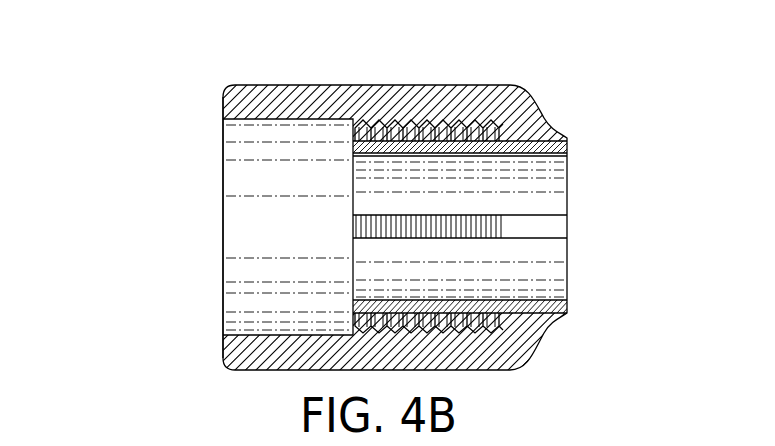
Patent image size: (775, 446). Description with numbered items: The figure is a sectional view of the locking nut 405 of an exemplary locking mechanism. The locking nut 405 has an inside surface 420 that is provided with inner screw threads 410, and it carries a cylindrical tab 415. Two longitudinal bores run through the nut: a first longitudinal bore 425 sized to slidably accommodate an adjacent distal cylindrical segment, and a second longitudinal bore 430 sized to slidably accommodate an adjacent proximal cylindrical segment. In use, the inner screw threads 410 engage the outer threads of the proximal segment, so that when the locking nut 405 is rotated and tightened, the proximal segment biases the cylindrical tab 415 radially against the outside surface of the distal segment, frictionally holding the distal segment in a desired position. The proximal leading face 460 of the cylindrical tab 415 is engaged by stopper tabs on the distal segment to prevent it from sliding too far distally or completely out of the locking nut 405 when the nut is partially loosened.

The locking nut 405 is at (578, 107).
The inner screw threads 410 is at (436, 136).
The cylindrical tab 415 is at (545, 198).
The inside surface 420 is at (295, 120).
The first longitudinal bore 425 is at (598, 232).
The second longitudinal bore 430 is at (218, 228).
The proximal leading face 460 is at (352, 305).